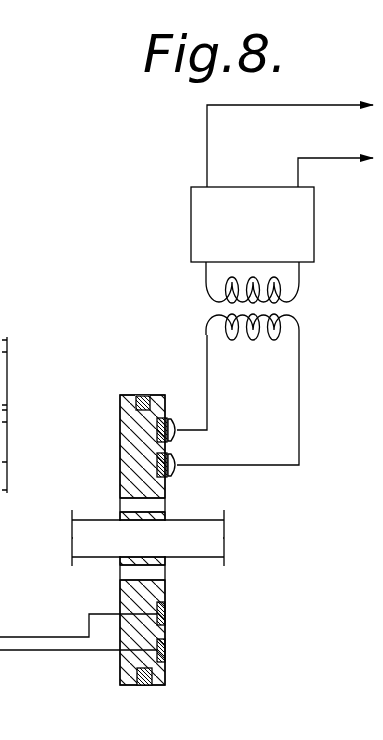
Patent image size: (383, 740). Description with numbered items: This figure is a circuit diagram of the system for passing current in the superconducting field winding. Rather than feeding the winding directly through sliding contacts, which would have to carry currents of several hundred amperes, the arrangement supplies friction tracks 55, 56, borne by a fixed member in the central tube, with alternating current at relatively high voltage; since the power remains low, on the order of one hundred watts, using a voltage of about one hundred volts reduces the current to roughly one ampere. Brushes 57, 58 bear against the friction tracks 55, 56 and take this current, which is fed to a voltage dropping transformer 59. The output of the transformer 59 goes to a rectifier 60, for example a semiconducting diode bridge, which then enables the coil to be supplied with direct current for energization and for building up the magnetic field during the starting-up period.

The friction track 55 is at (165, 612).
The friction track 56 is at (165, 651).
The brush 57 is at (178, 457).
The brush 58 is at (170, 419).
The voltage dropping transformer 59 is at (202, 309).
The rectifier 60 is at (256, 241).